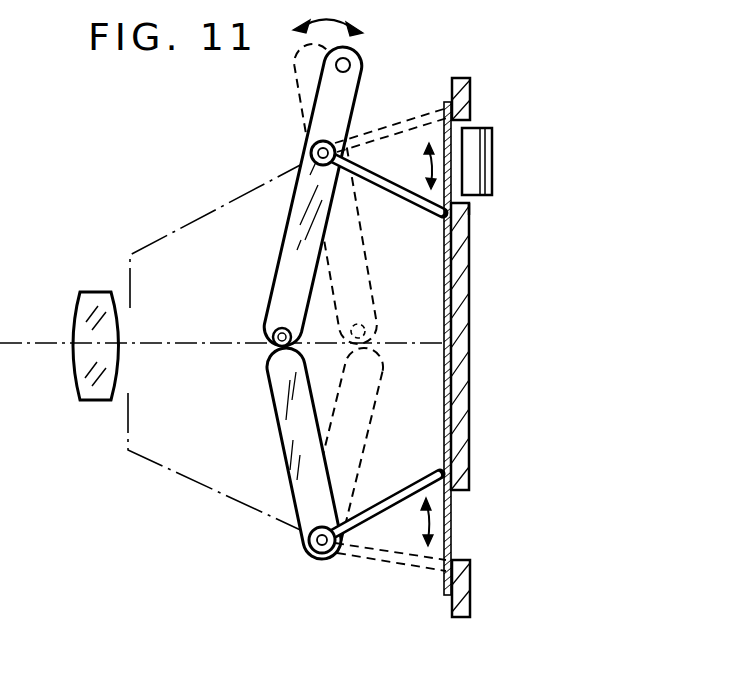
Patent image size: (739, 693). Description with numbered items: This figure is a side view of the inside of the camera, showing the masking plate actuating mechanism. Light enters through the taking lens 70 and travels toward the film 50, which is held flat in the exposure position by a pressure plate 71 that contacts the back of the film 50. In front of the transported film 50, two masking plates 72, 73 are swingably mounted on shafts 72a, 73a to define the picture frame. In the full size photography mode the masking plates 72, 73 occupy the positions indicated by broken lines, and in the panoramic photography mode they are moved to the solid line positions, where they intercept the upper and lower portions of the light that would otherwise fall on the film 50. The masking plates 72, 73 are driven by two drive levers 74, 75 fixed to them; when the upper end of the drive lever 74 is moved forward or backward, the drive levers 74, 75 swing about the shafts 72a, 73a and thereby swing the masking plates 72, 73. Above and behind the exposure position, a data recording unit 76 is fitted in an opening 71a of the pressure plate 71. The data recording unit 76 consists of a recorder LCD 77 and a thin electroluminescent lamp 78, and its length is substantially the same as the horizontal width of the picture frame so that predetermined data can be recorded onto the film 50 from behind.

The film 50 is at (460, 527).
The taking lens 70 is at (93, 403).
The pressure plate 71 is at (470, 268).
The opening of the pressure plate 71a is at (472, 203).
The masking plate 72 is at (383, 165).
The shaft 72a is at (311, 152).
The masking plate 73 is at (400, 515).
The shaft 73a is at (305, 541).
The drive lever 74 is at (298, 212).
The drive lever 75 is at (285, 432).
The data recording unit 76 is at (512, 182).
The recorder LCD 77 is at (473, 138).
The electroluminescent lamp 78 is at (493, 147).